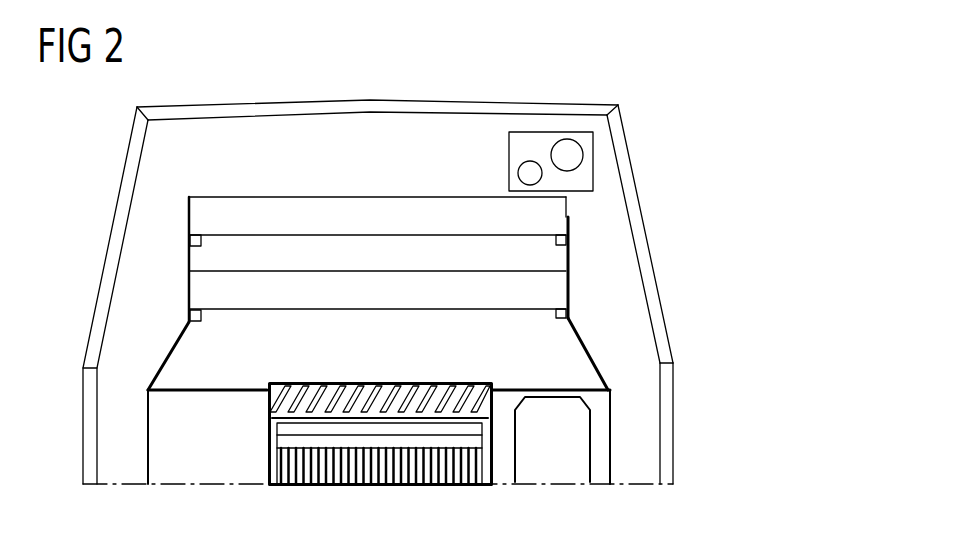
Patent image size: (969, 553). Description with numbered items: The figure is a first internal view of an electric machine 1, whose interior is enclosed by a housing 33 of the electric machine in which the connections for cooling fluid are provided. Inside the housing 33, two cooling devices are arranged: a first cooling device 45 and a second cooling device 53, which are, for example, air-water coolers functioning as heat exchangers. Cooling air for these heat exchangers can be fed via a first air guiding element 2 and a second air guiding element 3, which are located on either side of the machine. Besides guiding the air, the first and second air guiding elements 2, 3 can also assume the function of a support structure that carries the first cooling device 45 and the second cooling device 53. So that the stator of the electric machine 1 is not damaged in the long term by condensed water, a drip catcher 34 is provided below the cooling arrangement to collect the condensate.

The electric machine 1 is at (712, 112).
The first air guiding element 2 is at (588, 350).
The second air guiding element 3 is at (167, 355).
The housing 33 is at (643, 427).
The drip catcher 34 is at (347, 382).
The first cooling device 45 is at (357, 218).
The second cooling device 53 is at (510, 288).